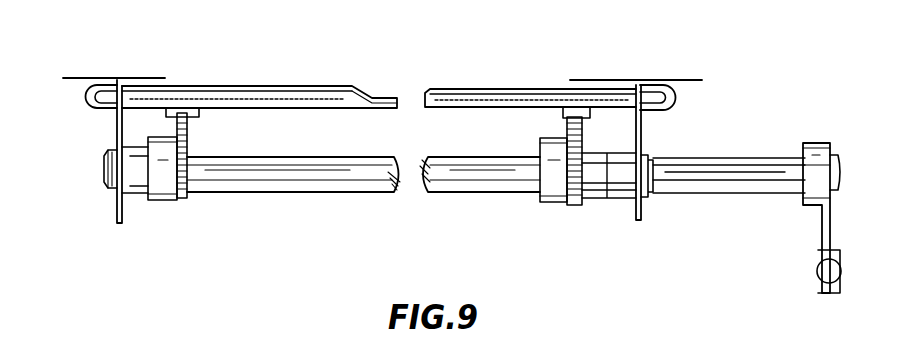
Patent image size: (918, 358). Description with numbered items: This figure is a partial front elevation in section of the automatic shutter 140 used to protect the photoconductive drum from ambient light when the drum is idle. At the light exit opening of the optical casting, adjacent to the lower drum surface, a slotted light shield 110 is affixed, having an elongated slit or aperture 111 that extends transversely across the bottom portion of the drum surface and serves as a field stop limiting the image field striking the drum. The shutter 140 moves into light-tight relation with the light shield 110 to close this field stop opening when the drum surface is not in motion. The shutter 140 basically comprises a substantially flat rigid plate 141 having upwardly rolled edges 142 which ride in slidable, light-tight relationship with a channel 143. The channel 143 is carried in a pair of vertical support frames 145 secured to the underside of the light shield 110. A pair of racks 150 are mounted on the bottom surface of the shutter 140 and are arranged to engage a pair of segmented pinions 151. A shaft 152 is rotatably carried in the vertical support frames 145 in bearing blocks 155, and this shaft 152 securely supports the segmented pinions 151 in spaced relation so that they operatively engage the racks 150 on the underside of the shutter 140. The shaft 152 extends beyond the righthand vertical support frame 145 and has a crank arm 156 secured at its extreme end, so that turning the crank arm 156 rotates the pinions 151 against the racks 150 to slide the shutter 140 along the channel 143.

The slotted light shield 110 is at (165, 78).
The elongated slit or aperture 111 is at (302, 44).
The automatic shutter 140 is at (280, 204).
The flat rigid plate 141 is at (394, 86).
The upwardly rolled edges 142 is at (478, 89).
The channel 143 is at (85, 96).
The vertical support frame 145 is at (117, 214).
The rack 150 is at (198, 110).
The segmented pinion 151 is at (188, 134).
The shaft 152 is at (478, 190).
The bearing block 155 is at (104, 178).
The crank arm 156 is at (828, 222).